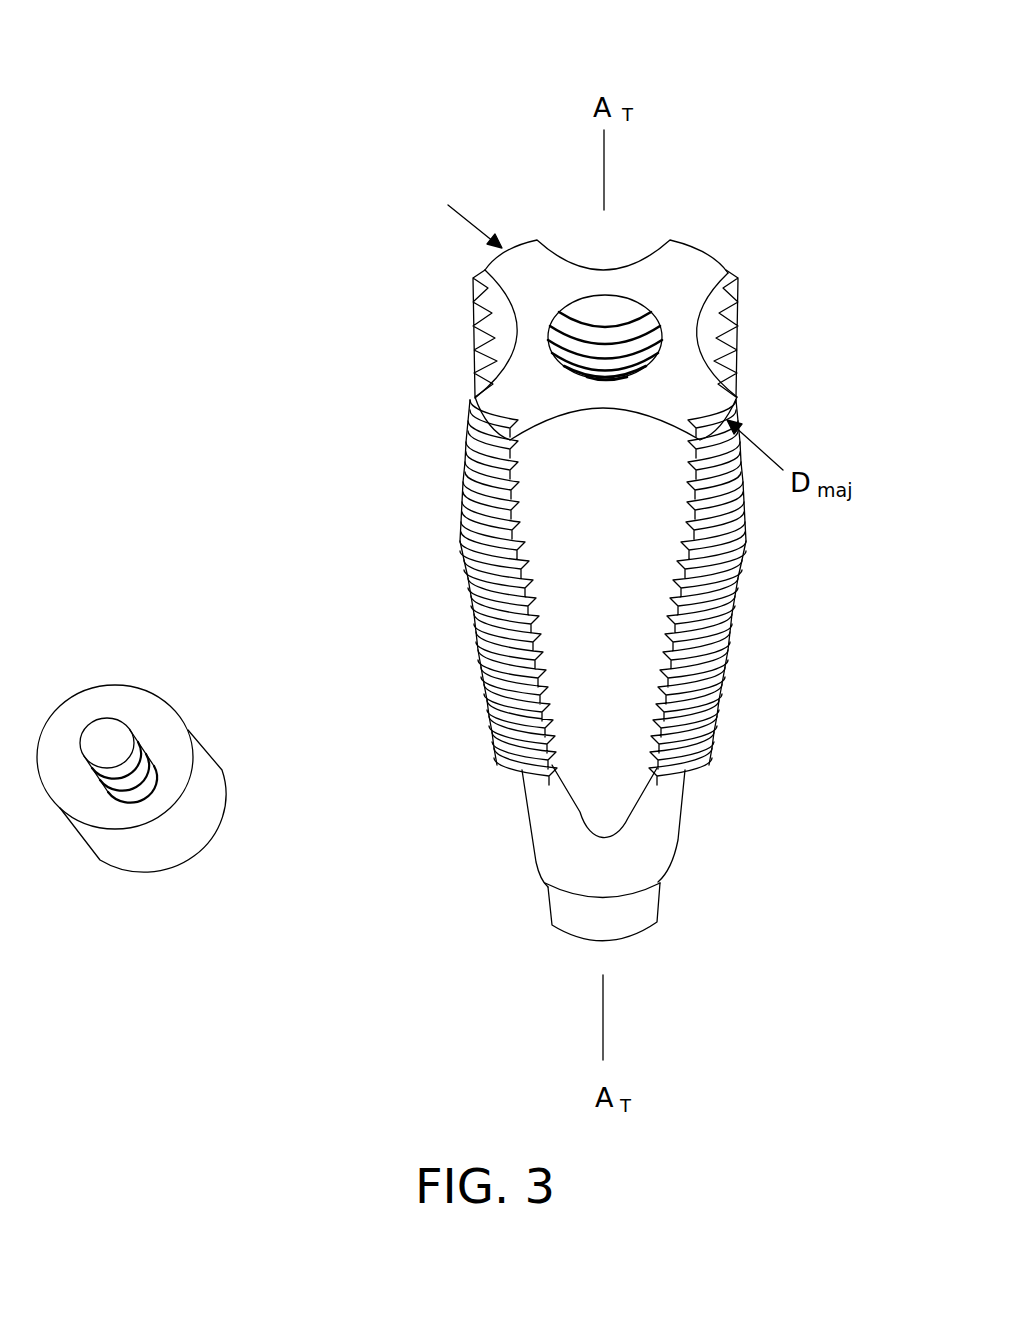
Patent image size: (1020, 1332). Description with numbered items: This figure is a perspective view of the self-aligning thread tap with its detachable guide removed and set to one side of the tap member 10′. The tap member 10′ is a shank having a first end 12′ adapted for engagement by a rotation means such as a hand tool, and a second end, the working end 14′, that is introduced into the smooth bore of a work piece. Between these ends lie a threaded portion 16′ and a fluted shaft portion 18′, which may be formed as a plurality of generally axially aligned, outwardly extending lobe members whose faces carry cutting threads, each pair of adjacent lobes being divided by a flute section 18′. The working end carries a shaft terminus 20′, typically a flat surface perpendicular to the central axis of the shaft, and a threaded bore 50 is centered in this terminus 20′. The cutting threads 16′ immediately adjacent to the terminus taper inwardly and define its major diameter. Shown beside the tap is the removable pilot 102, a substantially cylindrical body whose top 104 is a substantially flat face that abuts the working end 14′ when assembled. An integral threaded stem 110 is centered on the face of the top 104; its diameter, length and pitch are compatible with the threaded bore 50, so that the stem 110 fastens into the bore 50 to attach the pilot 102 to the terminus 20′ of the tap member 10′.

The tap member 10′ is at (737, 113).
The second end (working end) 14′ is at (767, 335).
The shaft terminus 20′ is at (693, 258).
The threaded bore 50 is at (581, 303).
The threaded portion 16′ is at (747, 667).
The fluted shaft portion (flute section) 18′ is at (590, 790).
The first end 12′ is at (683, 908).
The removable pilot 102 is at (225, 735).
The top 104 is at (150, 703).
The threaded stem 110 is at (98, 717).